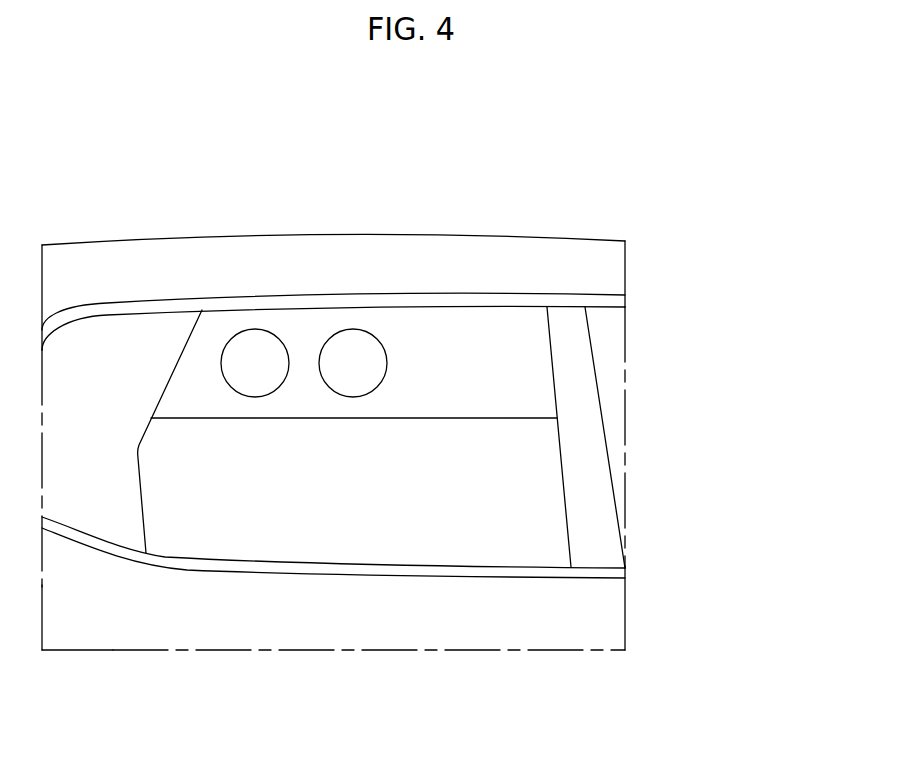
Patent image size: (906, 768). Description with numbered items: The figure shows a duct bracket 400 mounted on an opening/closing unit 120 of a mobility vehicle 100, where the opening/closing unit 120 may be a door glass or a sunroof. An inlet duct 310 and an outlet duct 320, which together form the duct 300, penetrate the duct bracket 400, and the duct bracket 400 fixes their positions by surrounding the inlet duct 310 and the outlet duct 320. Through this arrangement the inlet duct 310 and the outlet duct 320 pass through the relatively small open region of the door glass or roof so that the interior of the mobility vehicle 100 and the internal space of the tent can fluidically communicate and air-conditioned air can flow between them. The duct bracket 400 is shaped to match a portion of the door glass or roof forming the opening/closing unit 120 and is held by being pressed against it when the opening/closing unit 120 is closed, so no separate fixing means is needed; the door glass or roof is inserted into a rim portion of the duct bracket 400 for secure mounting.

The mobility vehicle 100 is at (539, 237).
The opening/closing unit 120 is at (378, 515).
The duct 300 is at (307, 238).
The inlet duct 310 is at (252, 348).
The outlet duct 320 is at (375, 269).
The duct bracket 400 is at (515, 363).